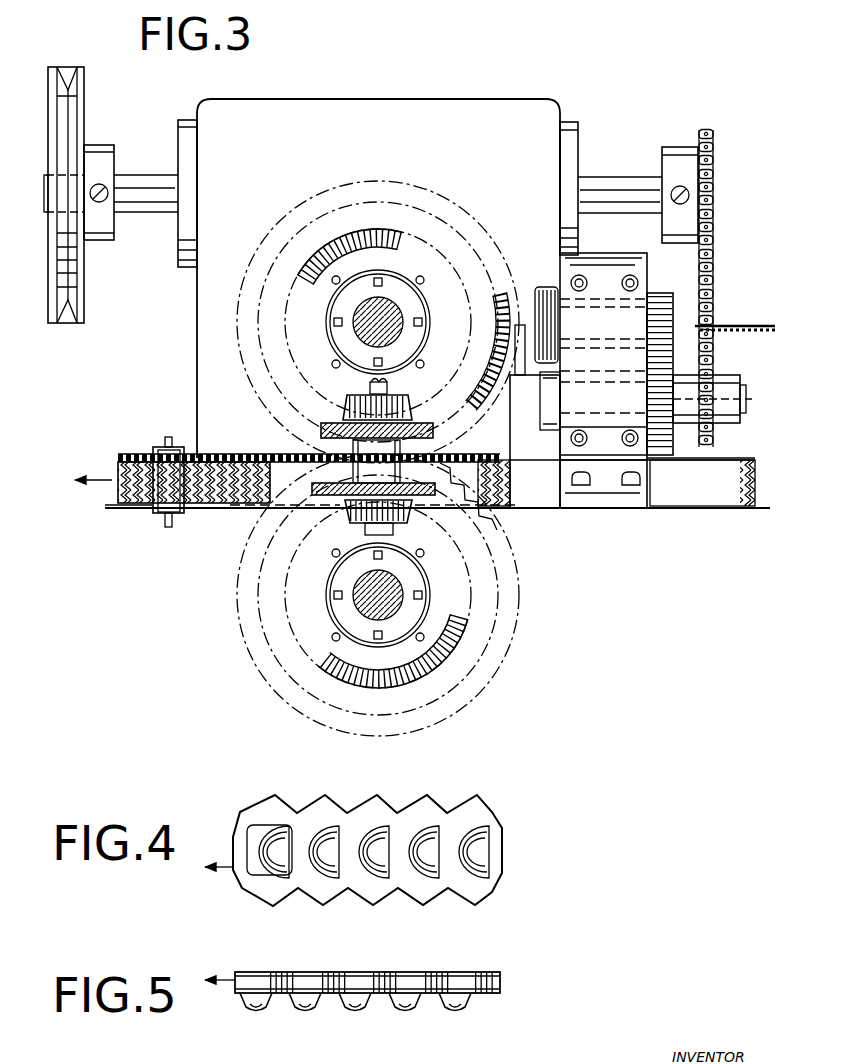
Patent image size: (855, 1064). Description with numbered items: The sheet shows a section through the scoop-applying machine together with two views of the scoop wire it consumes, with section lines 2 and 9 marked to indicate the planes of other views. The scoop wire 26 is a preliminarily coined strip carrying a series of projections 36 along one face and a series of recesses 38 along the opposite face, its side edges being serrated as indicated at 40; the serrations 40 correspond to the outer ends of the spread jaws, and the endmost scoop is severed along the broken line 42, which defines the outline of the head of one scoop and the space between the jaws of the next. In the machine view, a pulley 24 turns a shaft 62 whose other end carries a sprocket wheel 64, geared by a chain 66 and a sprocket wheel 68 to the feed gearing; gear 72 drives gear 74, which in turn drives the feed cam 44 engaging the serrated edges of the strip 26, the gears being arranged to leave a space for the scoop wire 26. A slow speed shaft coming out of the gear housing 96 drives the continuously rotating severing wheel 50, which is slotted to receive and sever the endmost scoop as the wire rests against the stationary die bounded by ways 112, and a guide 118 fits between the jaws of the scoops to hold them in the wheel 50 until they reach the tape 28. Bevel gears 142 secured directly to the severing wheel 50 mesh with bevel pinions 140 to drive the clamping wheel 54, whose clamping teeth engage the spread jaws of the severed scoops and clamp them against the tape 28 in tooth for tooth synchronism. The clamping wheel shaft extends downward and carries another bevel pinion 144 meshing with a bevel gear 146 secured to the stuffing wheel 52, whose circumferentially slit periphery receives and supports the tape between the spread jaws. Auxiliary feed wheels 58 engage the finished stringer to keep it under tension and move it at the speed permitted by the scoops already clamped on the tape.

In FIG. 3, the section line 2- 2 is at (377, 55).
In FIG. 3, the pulley 24 is at (80, 310).
In FIG. 3, the shaft 62 is at (157, 214).
In FIG. 3, the gear housing 96 is at (523, 112).
In FIG. 3, the chain 66 is at (713, 210).
In FIG. 3, the sprocket wheel 64 is at (707, 131).
In FIG. 3, the severing wheel 50 is at (450, 204).
In FIG. 3, the bevel gear 142 is at (340, 238).
In FIG. 3, the section line 9- 9 is at (470, 366).
In FIG. 3, the bevel pinion 140 is at (344, 407).
In FIG. 3, the ways 112 is at (520, 325).
In FIG. 3, the feed cam 44 is at (548, 292).
In FIG. 3, the guide 118 is at (506, 507).
In FIG. 3, the gear 74 is at (653, 294).
In FIG. 3, the sprocket wheel 68 is at (713, 375).
In FIG. 3, the scoop wire 26 is at (743, 324).
In FIG. 4, the scoop wire 26 is at (502, 828).
In FIG. 5, the scoop wire 26 is at (500, 980).
In FIG. 3, the gear 72 is at (670, 456).
In FIG. 3, the tape 28 is at (701, 499).
In FIG. 3, the auxiliary feed wheel 58 is at (153, 514).
In FIG. 3, the stuffing wheel 52 is at (505, 643).
In FIG. 3, the bevel gear 146 is at (432, 673).
In FIG. 3, the clamping wheel 54 is at (432, 497).
In FIG. 3, the bevel pinion 144 is at (344, 511).
In FIG. 4, the recesses 38 is at (332, 871).
In FIG. 4, the severing line 42 is at (267, 822).
In FIG. 4, the serrations 40 is at (460, 805).
In FIG. 5, the serrations 40 is at (437, 999).
In FIG. 5, the projections 36 is at (311, 1006).